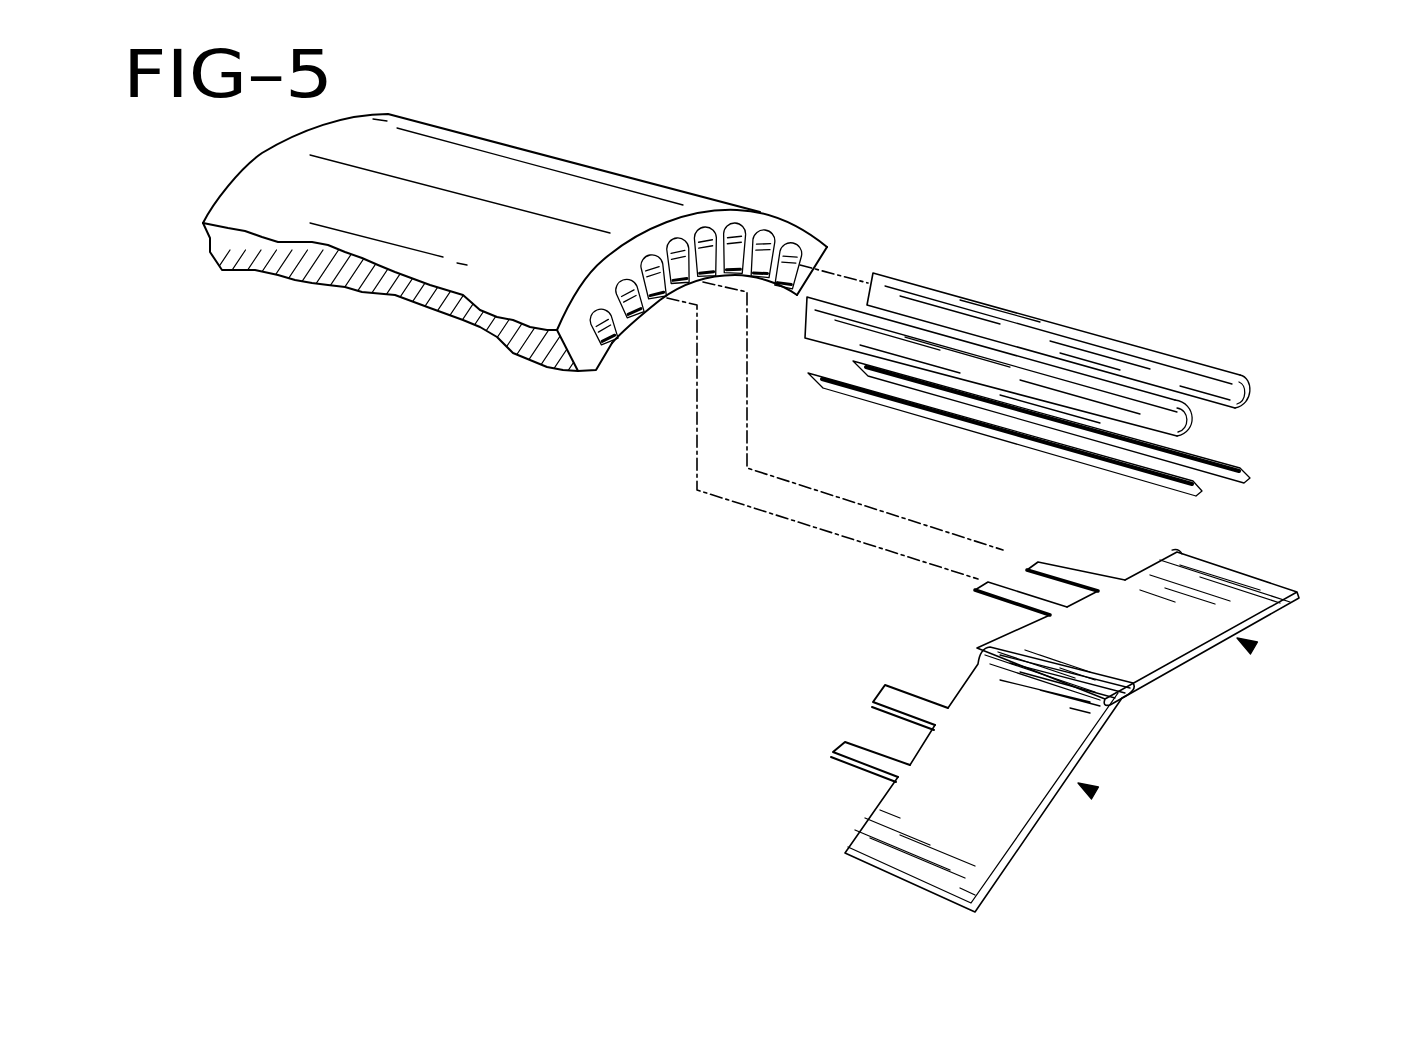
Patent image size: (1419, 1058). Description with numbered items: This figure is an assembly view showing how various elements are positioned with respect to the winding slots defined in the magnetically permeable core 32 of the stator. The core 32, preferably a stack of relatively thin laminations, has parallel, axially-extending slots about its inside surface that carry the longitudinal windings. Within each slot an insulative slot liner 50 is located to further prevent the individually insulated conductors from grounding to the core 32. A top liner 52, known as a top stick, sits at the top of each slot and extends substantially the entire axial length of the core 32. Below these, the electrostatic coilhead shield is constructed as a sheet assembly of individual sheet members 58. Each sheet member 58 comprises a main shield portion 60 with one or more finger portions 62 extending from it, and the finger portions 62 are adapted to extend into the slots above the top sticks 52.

The magnetically permeable core 32 is at (530, 177).
The insulative slot liner 50 is at (1105, 390).
The top liner 52 is at (1195, 494).
The sheet member 58 is at (1254, 648).
The main shield portion 60 is at (1147, 652).
The finger portion 62 is at (1013, 595).